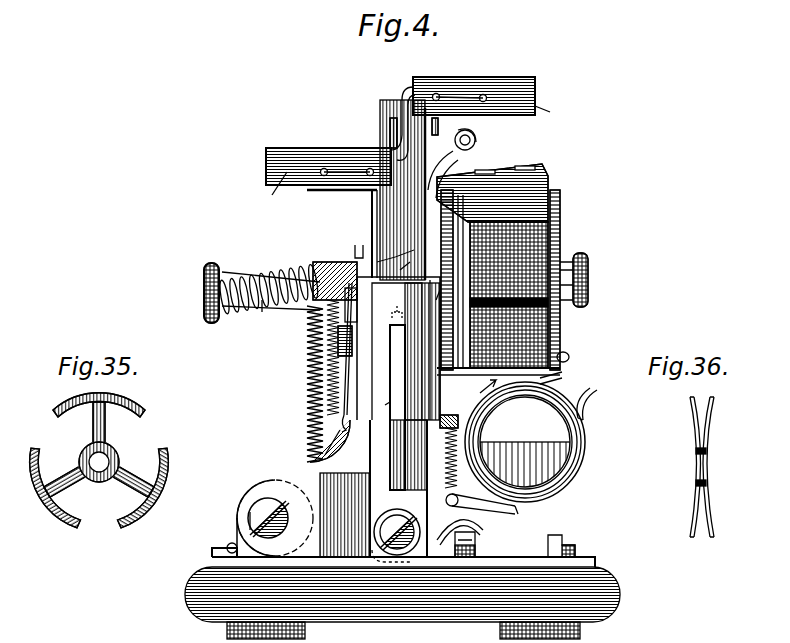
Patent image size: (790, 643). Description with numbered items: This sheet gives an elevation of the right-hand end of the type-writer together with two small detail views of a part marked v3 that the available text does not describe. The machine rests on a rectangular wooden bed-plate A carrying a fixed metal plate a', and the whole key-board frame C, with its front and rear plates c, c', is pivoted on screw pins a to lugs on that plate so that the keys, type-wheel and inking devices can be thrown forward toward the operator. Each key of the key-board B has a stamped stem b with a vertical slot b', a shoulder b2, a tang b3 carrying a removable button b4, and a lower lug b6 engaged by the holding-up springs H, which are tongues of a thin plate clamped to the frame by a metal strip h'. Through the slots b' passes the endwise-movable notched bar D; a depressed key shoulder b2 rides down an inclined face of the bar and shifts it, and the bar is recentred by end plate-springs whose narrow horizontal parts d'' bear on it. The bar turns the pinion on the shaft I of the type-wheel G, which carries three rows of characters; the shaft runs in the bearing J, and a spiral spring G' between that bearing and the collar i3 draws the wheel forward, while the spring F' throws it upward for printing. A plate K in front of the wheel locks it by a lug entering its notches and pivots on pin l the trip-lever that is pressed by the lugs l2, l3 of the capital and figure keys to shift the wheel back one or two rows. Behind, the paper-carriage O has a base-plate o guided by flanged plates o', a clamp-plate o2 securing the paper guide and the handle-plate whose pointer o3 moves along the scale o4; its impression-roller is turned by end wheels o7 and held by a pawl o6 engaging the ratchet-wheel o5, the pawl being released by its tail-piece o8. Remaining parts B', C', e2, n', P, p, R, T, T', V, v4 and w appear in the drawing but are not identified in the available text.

In FIG. 4, the bed-plate A is at (402, 603).
In FIG. 4, the screw pins a is at (275, 518).
In FIG. 4, the metal plate a' is at (418, 572).
In FIG. 4, the key-board B is at (400, 121).
In FIG. 4, the key-stem b is at (366, 183).
In FIG. 4, the key-stem slot b' is at (381, 403).
In FIG. 4, the key-shoulder b2 is at (404, 133).
In FIG. 4, the key-tang b3 is at (413, 156).
In FIG. 4, the key-button b4 is at (333, 367).
In FIG. 4, the key-lug b6 is at (330, 441).
In FIG. 4, the slide bar B' is at (405, 407).
In FIG. 4, the key-board frame C is at (373, 488).
In FIG. 4, the guide C' is at (434, 350).
In FIG. 4, the front plate of key-frame c is at (358, 244).
In FIG. 4, the rear plate of key-frame c' is at (407, 267).
In FIG. 4, the notched bar D is at (405, 348).
In FIG. 4, the narrow horizontal part of plate-spring d'' is at (393, 304).
In FIG. 4, the block e2 is at (360, 330).
In FIG. 4, the spring F' is at (302, 381).
In FIG. 4, the type-wheel G is at (501, 187).
In FIG. 4, the spiral spring G' is at (256, 316).
In FIG. 4, the key-supporting springs H is at (354, 357).
In FIG. 4, the metal strip h' is at (356, 305).
In FIG. 4, the type-wheel shaft I is at (276, 272).
In FIG. 4, the retaining collar i3 is at (208, 320).
In FIG. 4, the shaft-bearing J is at (334, 262).
In FIG. 4, the locking plate K is at (455, 158).
In FIG. 4, the trip-lever pin l is at (476, 140).
In FIG. 4, the capital-key lug l2 is at (390, 122).
In FIG. 4, the figure-key lug l3 is at (441, 126).
In FIG. 4, the screw n' is at (396, 523).
In FIG. 4, the paper-carriage O is at (534, 442).
In FIG. 4, the carriage base-plate o is at (460, 544).
In FIG. 4, the guide-plates o' is at (571, 537).
In FIG. 4, the clamp-plate o2 is at (478, 385).
In FIG. 4, the pointer o3 is at (230, 543).
In FIG. 4, the scale o4 is at (212, 552).
In FIG. 4, the ratchet-wheel o5 is at (500, 512).
In FIG. 4, the pawl o6 is at (475, 525).
In FIG. 4, the end wheel o7 is at (517, 430).
In FIG. 4, the pawl tail-piece o8 is at (588, 410).
In FIG. 4, the drum P is at (498, 298).
In FIG. 4, the pin p is at (569, 357).
In FIG. 4, the pawl R is at (449, 428).
In FIG. 4, the arm T is at (555, 381).
In FIG. 4, the arm T' is at (594, 391).
In FIG. 4, the frame V is at (570, 196).
In FIG. 35, the wheel v3 is at (99, 465).
In FIG. 36, the wheel v3 is at (701, 467).
In FIG. 4, the knob v4 is at (588, 262).
In FIG. 4, the pin w is at (433, 298).